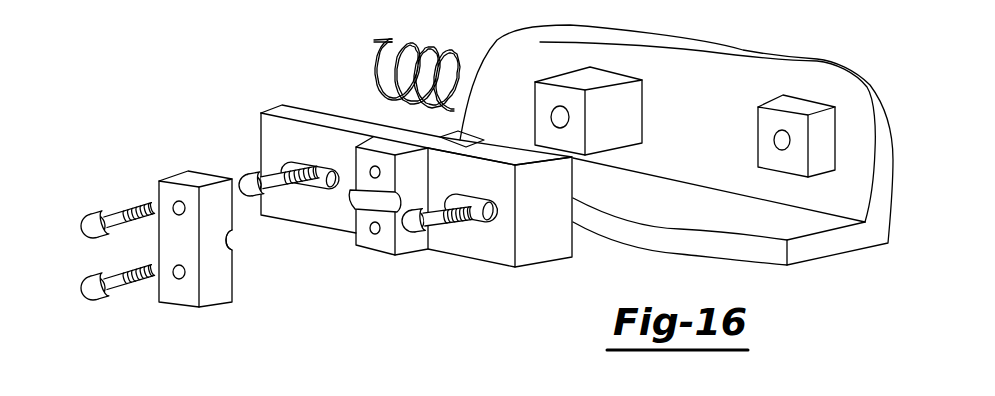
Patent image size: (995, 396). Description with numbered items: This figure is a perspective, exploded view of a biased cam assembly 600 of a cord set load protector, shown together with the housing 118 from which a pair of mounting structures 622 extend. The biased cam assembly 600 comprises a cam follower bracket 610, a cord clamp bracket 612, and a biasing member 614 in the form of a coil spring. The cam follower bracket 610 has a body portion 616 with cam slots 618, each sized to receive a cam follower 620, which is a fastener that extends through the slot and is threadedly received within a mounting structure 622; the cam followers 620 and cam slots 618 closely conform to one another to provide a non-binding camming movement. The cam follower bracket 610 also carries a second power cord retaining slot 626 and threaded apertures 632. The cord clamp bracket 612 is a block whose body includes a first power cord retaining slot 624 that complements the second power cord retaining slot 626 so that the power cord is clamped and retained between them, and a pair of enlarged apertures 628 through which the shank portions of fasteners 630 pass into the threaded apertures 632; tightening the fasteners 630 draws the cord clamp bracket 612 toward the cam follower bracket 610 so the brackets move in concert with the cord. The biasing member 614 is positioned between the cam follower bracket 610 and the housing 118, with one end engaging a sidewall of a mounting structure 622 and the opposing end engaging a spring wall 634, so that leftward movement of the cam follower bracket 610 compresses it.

The housing 118 is at (666, 133).
The biased cam assembly 600 is at (240, 58).
The cam follower bracket 610 is at (405, 193).
The cord clamp bracket 612 is at (198, 263).
The biasing member 614 is at (362, 45).
The body portion 616 is at (350, 125).
The cam slots 618 is at (323, 164).
The cam follower 620 is at (270, 180).
The mounting structure 622 is at (535, 82).
The first power cord retaining slot 624 is at (228, 240).
The second power cord retaining slot 626 is at (393, 208).
The enlarged apertures 628 is at (172, 207).
The fasteners 630 is at (82, 288).
The threaded aperture 632 is at (368, 228).
The spring wall 634 is at (473, 137).